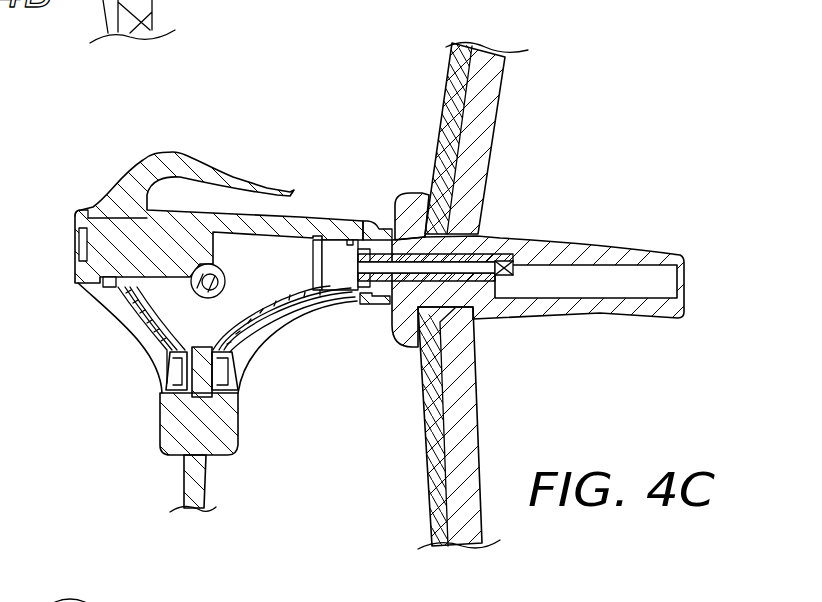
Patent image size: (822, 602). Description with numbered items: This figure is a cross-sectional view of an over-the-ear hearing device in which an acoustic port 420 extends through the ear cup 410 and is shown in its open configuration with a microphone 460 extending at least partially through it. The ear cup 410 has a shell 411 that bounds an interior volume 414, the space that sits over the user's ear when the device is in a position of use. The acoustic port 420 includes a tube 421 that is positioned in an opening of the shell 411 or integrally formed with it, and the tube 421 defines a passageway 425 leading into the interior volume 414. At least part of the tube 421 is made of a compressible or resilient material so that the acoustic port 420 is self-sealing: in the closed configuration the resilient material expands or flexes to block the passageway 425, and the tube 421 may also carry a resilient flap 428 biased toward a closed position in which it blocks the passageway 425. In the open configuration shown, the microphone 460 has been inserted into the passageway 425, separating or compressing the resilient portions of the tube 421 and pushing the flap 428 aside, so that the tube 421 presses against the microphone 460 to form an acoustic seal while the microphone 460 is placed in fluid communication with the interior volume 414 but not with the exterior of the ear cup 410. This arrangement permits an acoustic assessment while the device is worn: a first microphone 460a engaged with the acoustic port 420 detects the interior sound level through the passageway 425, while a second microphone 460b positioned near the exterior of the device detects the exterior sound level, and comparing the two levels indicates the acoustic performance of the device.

The ear cup 410 is at (440, 64).
The shell 411 is at (452, 98).
The interior volume 414 is at (745, 295).
The acoustic port 420 is at (412, 182).
The tube 421 is at (408, 212).
The passageway 425 is at (531, 276).
The resilient flap 428 is at (505, 261).
The microphone 460 is at (128, 352).
The first microphone 460a is at (366, 306).
The second microphone 460b is at (76, 212).